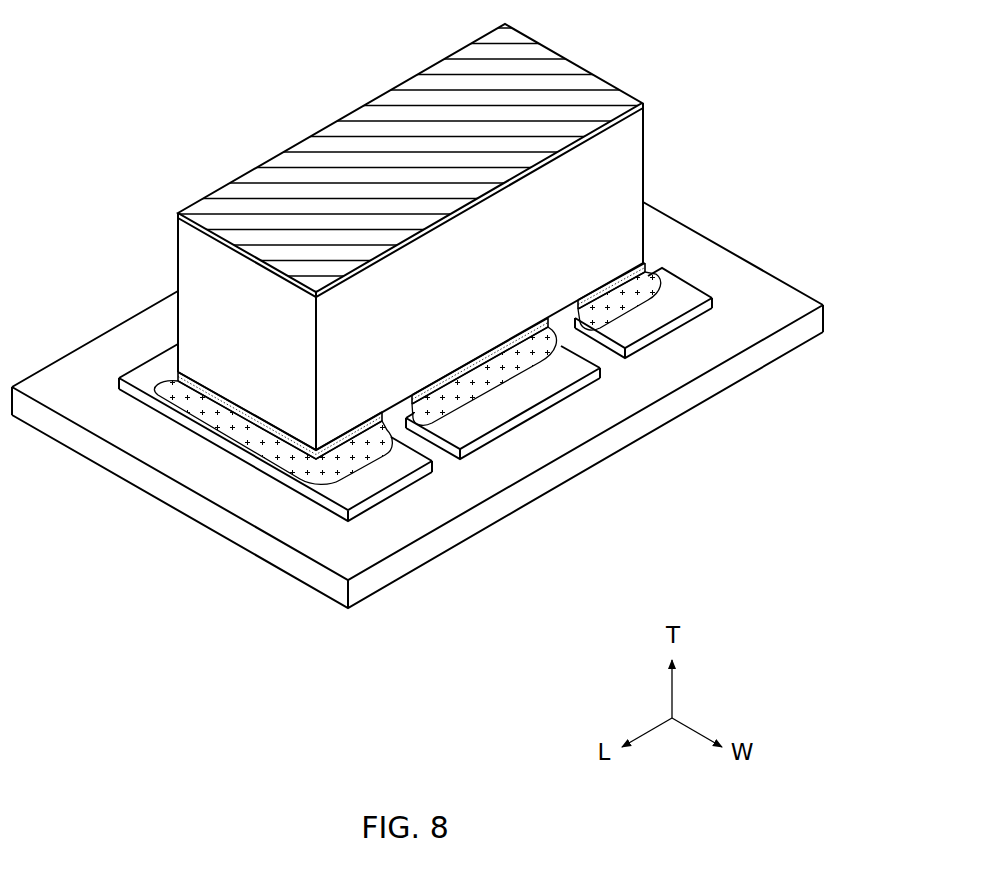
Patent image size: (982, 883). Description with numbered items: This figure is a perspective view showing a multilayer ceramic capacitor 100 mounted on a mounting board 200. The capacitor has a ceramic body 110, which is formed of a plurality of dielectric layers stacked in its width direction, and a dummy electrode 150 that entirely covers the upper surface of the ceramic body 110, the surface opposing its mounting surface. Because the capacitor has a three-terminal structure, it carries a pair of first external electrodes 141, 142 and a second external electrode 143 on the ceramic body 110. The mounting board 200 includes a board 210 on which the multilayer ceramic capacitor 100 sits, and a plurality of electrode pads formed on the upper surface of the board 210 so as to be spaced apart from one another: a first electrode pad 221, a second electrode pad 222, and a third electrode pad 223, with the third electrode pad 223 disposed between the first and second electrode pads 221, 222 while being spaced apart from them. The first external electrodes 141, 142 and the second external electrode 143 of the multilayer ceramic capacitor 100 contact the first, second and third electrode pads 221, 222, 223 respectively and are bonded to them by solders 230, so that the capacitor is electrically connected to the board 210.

The multilayer ceramic capacitor 100 is at (407, 236).
The ceramic body 110 is at (185, 257).
The dummy electrode 150 is at (418, 110).
The first external electrode 141 is at (252, 410).
The first external electrode 142 is at (618, 277).
The second external electrode 143 is at (493, 347).
The mounting board 200 is at (429, 434).
The board 210 is at (322, 547).
The first electrode pad 221 is at (380, 490).
The second electrode pad 222 is at (660, 318).
The third electrode pad 223 is at (492, 418).
The solder 230 is at (262, 445).